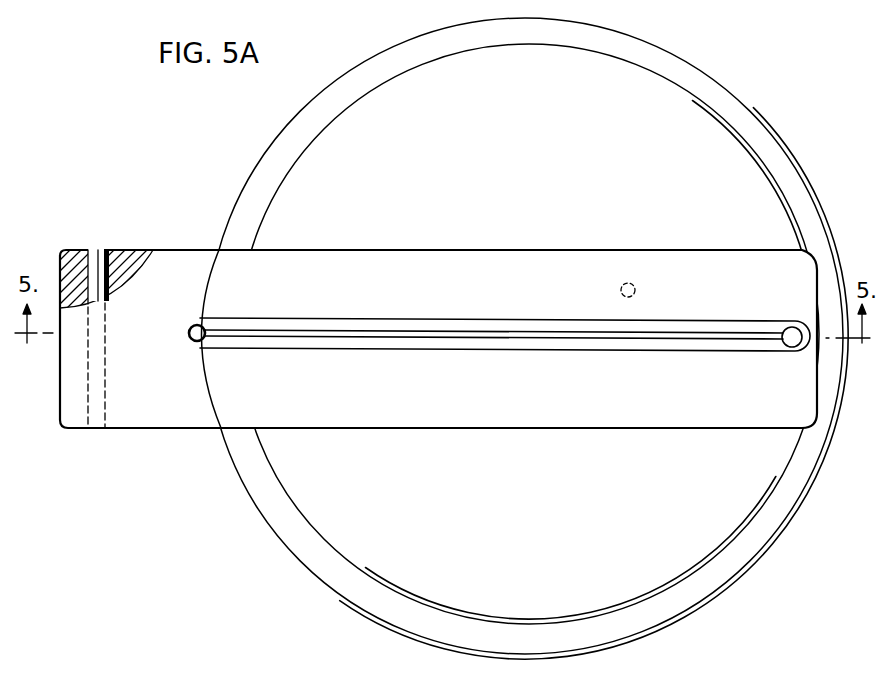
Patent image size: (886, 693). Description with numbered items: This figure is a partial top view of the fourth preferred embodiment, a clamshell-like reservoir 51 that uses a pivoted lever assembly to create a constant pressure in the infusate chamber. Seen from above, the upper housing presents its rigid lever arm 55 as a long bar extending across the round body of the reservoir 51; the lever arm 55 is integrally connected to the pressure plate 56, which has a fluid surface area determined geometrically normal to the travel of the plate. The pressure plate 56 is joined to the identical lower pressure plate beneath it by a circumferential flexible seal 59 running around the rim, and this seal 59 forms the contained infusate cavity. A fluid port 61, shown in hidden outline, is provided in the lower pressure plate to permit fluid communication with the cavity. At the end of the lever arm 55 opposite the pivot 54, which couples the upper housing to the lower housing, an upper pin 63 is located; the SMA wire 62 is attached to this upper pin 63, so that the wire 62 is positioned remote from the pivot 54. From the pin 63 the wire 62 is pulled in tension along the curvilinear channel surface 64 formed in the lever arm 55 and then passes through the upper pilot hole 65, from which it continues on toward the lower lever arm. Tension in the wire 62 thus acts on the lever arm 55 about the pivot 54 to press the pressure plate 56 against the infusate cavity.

The clamshell-like reservoir 51 is at (252, 148).
The pivot 54 is at (97, 256).
The rigid lever arm 55 is at (163, 410).
The pressure plate 56 is at (704, 131).
The circumferential flexible seal 59 is at (746, 549).
The fluid port 61 is at (622, 283).
The SMA wire 62 is at (387, 341).
The upper pin 63 is at (787, 348).
The curvilinear channel surface 64 is at (319, 350).
The upper pilot hole 65 is at (194, 325).